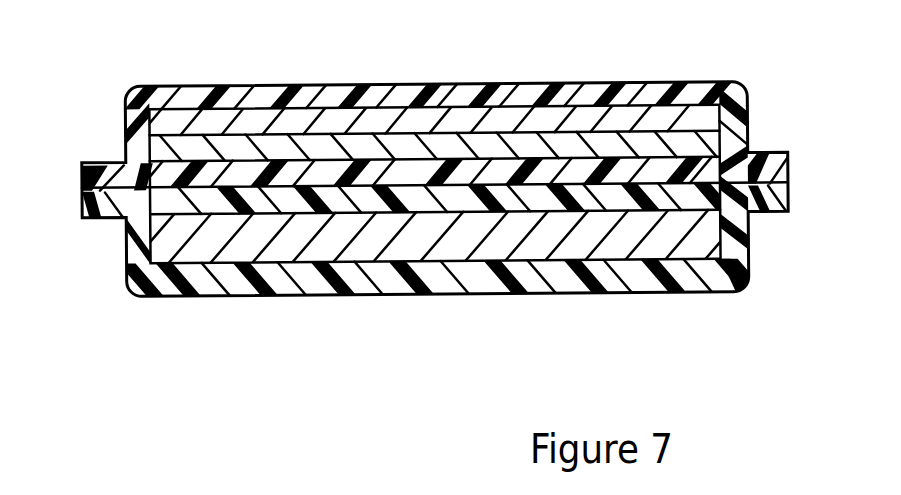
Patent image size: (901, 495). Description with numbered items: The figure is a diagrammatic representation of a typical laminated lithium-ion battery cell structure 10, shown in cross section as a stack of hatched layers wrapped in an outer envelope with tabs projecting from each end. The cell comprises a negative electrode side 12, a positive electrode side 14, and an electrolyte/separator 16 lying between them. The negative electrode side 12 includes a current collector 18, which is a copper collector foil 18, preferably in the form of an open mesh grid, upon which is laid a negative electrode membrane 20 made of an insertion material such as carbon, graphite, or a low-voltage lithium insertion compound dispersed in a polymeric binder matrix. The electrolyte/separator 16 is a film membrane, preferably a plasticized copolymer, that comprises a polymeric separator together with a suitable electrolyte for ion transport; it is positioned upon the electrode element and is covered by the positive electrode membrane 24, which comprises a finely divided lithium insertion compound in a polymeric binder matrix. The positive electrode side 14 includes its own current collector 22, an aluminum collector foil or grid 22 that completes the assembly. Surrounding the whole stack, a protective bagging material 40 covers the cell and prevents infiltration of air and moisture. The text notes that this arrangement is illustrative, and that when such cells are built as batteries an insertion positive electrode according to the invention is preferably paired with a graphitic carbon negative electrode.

The laminated battery cell structure 10 is at (763, 79).
The negative electrode side 12 is at (405, 84).
The positive electrode side 14 is at (278, 266).
The electrolyte/separator 16 is at (673, 168).
The copper collector foil 18 is at (567, 107).
The negative electrode membrane 20 is at (162, 150).
The aluminum collector foil 22 is at (170, 238).
The positive electrode membrane 24 is at (690, 203).
The protective bagging material 40 is at (724, 289).